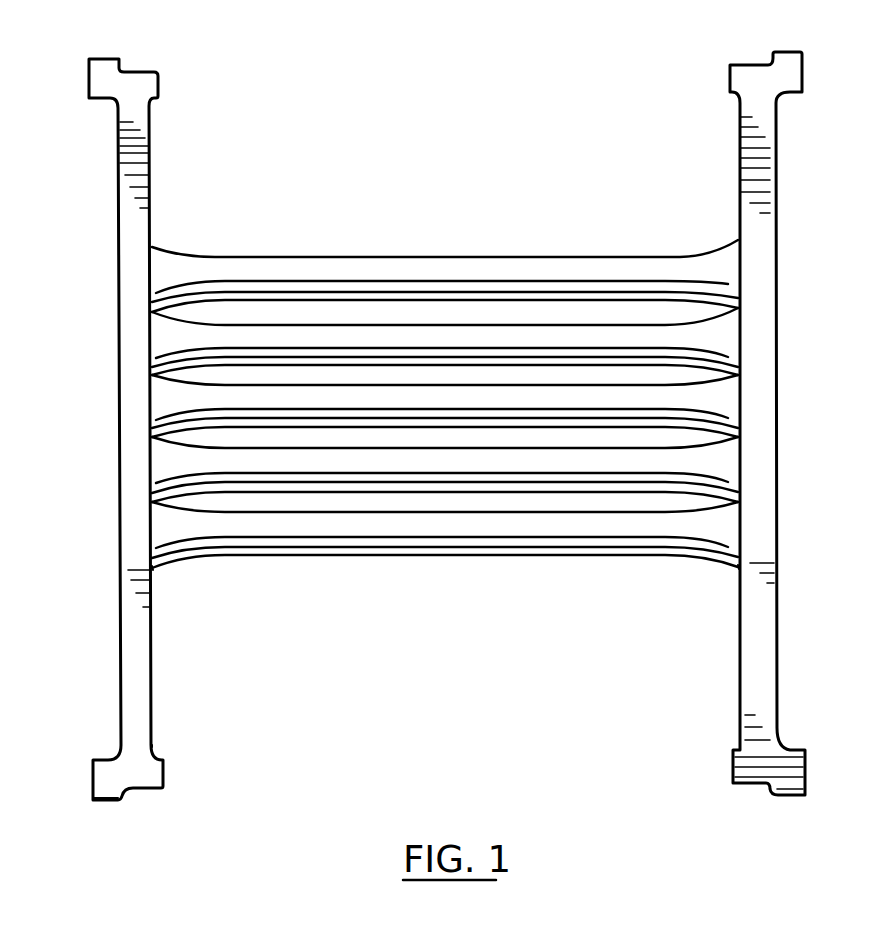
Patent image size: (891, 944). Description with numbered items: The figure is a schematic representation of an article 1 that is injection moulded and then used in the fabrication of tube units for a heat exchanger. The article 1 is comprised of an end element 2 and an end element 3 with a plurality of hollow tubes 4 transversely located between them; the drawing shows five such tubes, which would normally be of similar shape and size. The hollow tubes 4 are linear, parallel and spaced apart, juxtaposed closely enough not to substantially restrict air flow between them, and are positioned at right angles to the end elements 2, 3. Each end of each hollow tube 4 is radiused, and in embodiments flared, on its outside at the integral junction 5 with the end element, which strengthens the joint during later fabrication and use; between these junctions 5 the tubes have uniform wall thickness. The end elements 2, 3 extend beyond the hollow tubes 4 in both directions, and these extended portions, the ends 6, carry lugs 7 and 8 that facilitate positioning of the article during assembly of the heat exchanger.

The article 1 is at (404, 742).
The end element 2 is at (120, 628).
The end element 3 is at (780, 605).
The hollow tube 4 is at (460, 262).
The integral junction 5 is at (160, 570).
The end 6 is at (78, 757).
The lug 7 is at (158, 80).
The lug 8 is at (89, 80).